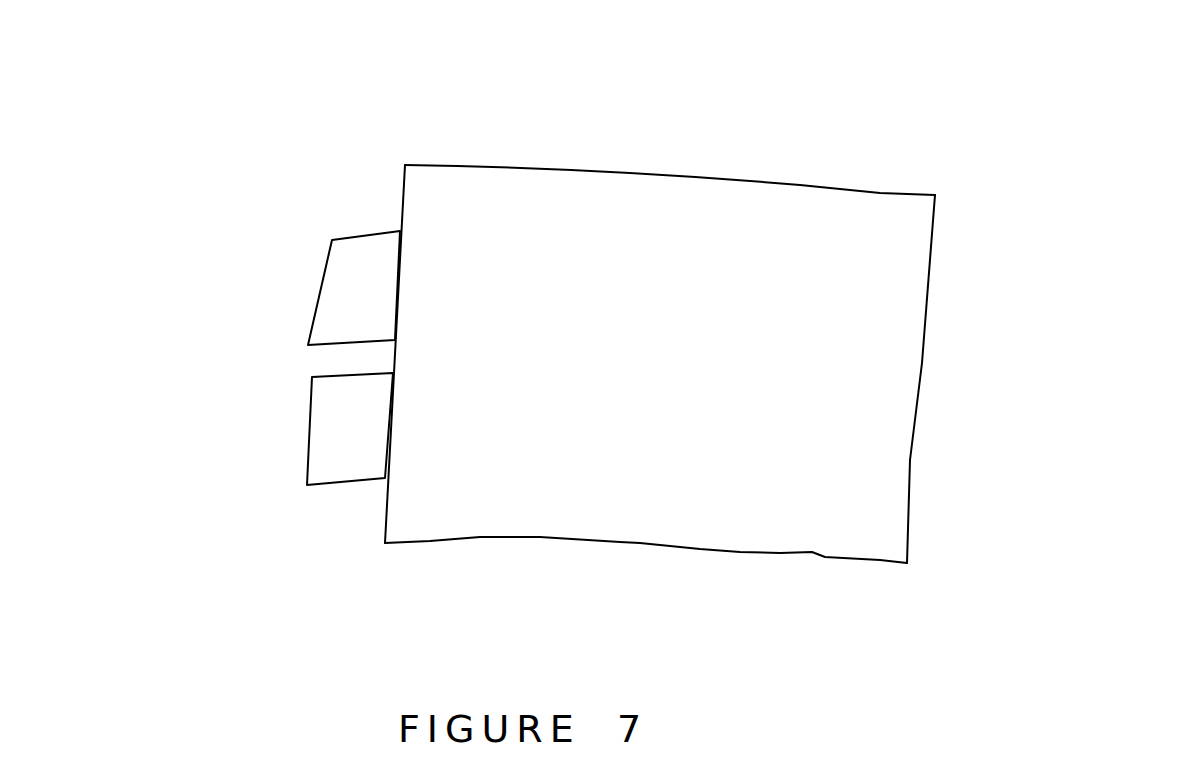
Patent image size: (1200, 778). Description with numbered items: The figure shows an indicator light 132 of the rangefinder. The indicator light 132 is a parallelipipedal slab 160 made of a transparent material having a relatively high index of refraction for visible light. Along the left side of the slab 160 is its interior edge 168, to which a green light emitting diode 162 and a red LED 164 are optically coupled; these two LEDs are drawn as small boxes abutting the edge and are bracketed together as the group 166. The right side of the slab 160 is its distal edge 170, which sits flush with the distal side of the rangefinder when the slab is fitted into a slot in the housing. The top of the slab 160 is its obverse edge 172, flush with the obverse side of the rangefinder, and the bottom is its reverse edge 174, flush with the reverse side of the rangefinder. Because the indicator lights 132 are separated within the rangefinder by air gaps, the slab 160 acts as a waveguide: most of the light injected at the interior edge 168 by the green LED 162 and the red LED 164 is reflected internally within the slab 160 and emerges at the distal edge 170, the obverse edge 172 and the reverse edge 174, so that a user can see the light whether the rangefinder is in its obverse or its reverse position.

The indicator light 132 is at (691, 345).
The parallelipipedal slab 160 is at (657, 361).
The green light emitting diode 162 is at (380, 318).
The red LED 164 is at (350, 429).
The light sources 166 is at (296, 358).
The interior edge 168 is at (400, 195).
The distal edge 170 is at (922, 362).
The obverse edge 172 is at (645, 178).
The reverse edge 174 is at (628, 545).